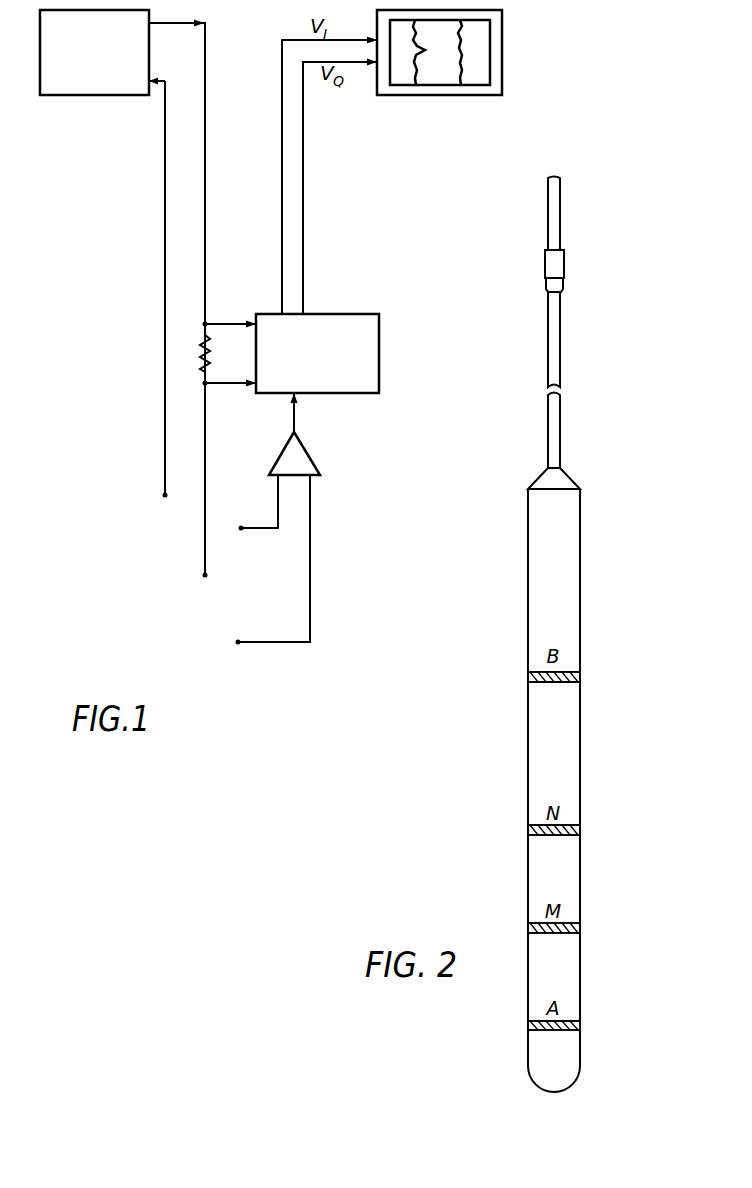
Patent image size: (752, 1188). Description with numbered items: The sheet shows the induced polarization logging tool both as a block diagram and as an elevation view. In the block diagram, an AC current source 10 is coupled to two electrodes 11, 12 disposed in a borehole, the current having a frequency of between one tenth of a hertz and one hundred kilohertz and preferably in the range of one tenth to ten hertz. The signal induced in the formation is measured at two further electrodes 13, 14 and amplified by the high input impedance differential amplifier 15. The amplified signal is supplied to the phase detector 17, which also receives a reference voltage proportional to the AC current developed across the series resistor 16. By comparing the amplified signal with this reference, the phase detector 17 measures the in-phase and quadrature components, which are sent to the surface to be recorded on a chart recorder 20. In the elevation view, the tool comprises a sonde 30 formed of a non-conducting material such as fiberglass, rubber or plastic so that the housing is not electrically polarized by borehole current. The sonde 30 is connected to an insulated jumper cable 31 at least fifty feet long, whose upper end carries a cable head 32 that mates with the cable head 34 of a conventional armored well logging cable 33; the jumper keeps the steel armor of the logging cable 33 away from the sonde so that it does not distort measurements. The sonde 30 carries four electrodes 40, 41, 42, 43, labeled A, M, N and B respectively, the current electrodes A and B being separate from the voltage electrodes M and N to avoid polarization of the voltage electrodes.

In FIG. 1, the AC current source 10 is at (92, 95).
In FIG. 1, the electrode 11 is at (163, 496).
In FIG. 1, the electrode 12 is at (204, 577).
In FIG. 1, the electrode 13 is at (236, 644).
In FIG. 1, the electrode 14 is at (241, 530).
In FIG. 1, the high input impedance differential amplifier 15 is at (313, 459).
In FIG. 1, the series resistor 16 is at (212, 357).
In FIG. 1, the phase detector 17 is at (379, 374).
In FIG. 1, the chart recorder 20 is at (452, 95).
In FIG. 2, the sonde 30 is at (582, 734).
In FIG. 2, the jumper cable 31 is at (561, 420).
In FIG. 2, the cable head 32 is at (565, 290).
In FIG. 2, the well logging cable 33 is at (561, 215).
In FIG. 2, the cable head 34 is at (565, 268).
In FIG. 2, the electrode 40 is at (580, 1026).
In FIG. 2, the electrode 41 is at (580, 927).
In FIG. 2, the electrode 42 is at (580, 830).
In FIG. 2, the electrode 43 is at (580, 677).